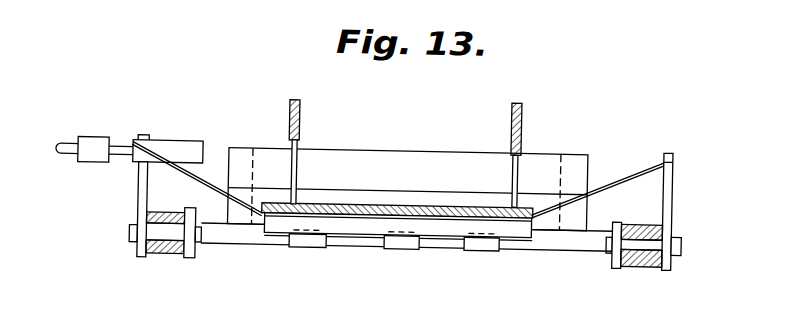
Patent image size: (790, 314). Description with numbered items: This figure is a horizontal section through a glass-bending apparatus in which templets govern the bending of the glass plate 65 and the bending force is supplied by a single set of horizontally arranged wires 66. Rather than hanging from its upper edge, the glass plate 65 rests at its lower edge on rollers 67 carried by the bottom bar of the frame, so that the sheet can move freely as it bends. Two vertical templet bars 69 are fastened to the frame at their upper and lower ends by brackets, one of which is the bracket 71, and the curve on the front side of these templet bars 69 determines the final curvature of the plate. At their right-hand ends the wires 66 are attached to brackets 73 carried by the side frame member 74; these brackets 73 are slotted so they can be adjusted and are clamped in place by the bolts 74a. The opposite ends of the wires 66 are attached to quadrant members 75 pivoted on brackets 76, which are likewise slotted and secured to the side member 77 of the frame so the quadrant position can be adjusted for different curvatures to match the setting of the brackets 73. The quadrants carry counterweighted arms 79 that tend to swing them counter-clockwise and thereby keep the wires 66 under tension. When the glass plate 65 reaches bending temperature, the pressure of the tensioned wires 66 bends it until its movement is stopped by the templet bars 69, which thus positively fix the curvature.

The glass plate 65 is at (410, 205).
The wires 66 is at (613, 179).
The rollers 67 is at (400, 247).
The templet bars 69 is at (298, 110).
The bracket 71 is at (372, 166).
The brackets 73 is at (667, 188).
The side frame member 74 is at (632, 220).
The bolts 74a is at (683, 241).
The quadrant members 75 is at (177, 148).
The brackets 76 is at (142, 205).
The side member 77 is at (173, 259).
The counterweighted arms 79 is at (95, 162).